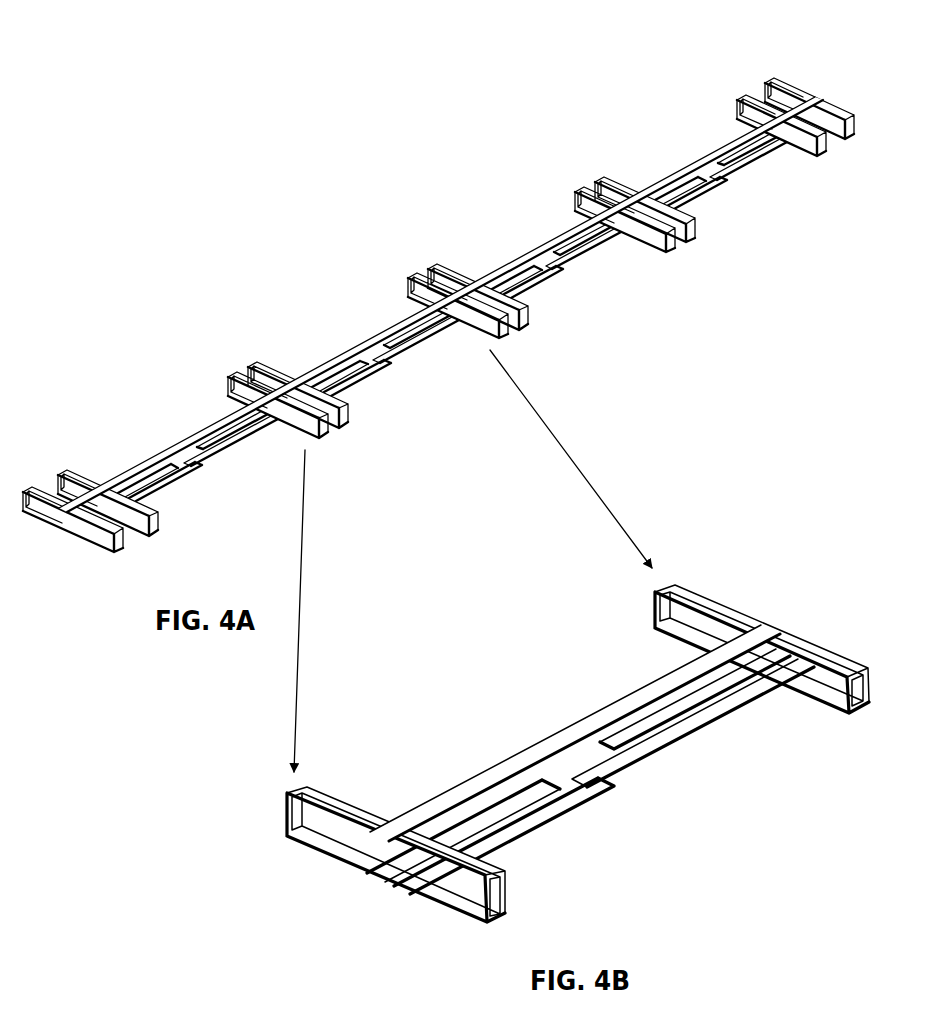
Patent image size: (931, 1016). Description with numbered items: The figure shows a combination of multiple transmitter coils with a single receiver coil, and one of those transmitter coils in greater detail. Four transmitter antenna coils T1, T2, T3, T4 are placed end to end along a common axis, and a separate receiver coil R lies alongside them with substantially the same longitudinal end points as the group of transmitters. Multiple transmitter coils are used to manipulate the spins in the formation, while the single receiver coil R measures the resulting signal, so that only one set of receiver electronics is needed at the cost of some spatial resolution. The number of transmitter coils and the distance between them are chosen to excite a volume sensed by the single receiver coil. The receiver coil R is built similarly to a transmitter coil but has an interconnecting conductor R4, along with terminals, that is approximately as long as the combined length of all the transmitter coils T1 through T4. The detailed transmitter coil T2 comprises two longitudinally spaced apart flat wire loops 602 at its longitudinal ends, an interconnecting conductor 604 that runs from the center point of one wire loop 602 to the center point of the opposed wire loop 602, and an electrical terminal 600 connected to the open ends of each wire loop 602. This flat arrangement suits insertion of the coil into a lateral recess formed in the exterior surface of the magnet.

In FIG. 4A, the transmitter antenna coil T1 is at (62, 471).
In FIG. 4A, the transmitter antenna coil T2 is at (248, 362).
In FIG. 4B, the transmitter antenna coil T2 is at (551, 753).
In FIG. 4A, the transmitter antenna coil T3 is at (430, 268).
In FIG. 4A, the transmitter antenna coil T4 is at (591, 176).
In FIG. 4A, the receiver coil R is at (766, 82).
In FIG. 4A, the interconnecting conductor of the receiver coil R4 is at (342, 360).
In FIG. 4B, the electrical terminal 600 is at (536, 831).
In FIG. 4B, the flat wire loop 602 is at (316, 839).
In FIG. 4B, the interconnecting conductor 604 is at (530, 745).